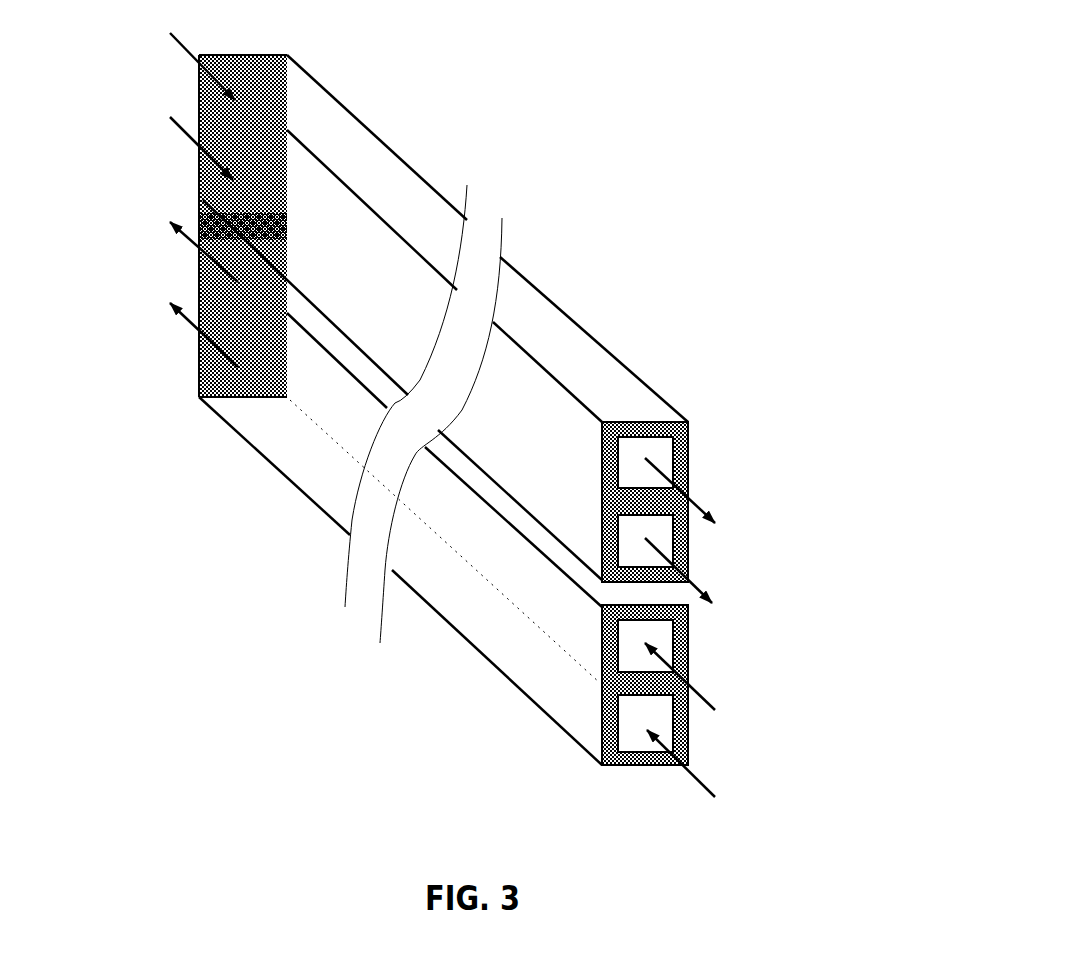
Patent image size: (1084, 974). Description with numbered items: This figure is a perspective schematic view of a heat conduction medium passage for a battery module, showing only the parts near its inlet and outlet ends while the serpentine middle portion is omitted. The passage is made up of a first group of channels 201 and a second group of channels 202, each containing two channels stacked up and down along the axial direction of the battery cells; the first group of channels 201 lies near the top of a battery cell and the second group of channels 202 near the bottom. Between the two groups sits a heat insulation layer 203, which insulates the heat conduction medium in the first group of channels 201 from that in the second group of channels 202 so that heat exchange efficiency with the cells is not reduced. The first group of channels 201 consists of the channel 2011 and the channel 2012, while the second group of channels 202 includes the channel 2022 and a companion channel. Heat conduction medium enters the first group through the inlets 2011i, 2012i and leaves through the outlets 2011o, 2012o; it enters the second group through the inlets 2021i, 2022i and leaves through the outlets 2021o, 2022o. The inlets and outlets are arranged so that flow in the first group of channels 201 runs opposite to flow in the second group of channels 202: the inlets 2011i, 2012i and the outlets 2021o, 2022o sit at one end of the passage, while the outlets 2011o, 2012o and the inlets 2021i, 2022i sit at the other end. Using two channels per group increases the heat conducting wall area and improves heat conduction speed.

The first group of channels 201 is at (540, 340).
The second group of channels 202 is at (478, 657).
The heat insulation layer 203 is at (690, 594).
The channel 2011 is at (689, 452).
The channel 2012 is at (689, 522).
The channel 2022 is at (689, 707).
The inlet 2011i is at (198, 80).
The inlet 2012i is at (198, 167).
The outlet 2011o is at (689, 462).
The outlet 2012o is at (689, 545).
The inlet 2021i is at (690, 663).
The inlet 2022i is at (690, 740).
The outlet 2021o is at (198, 278).
The outlet 2022o is at (198, 345).